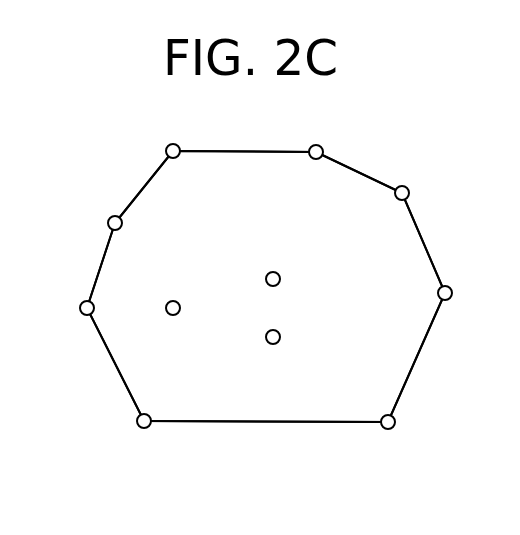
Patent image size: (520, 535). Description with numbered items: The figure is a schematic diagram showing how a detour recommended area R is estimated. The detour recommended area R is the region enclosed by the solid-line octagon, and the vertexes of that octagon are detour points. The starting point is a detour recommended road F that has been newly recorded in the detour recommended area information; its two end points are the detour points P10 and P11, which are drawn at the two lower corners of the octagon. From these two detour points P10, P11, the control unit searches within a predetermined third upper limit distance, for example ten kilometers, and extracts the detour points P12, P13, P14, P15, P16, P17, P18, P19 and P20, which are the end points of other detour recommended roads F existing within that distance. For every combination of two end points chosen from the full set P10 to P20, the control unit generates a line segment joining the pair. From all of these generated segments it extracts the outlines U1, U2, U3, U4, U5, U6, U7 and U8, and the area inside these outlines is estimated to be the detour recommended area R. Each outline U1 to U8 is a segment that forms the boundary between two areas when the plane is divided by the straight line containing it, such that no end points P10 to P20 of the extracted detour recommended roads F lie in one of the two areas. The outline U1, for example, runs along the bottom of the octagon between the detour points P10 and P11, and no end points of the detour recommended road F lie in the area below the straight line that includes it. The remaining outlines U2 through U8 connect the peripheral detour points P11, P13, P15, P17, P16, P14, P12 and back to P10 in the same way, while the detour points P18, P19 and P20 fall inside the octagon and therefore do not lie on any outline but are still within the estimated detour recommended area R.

The detour recommended road F is at (266, 307).
The detour recommended area R is at (259, 320).
The outline U1 is at (272, 456).
The outline U2 is at (451, 357).
The outline U3 is at (457, 243).
The outline U4 is at (379, 164).
The outline U5 is at (244, 170).
The outline U6 is at (118, 186).
The outline U7 is at (70, 265).
The outline U8 is at (88, 364).
The detour point P10 is at (117, 429).
The detour point P11 is at (414, 430).
The detour point P12 is at (58, 307).
The detour point P13 is at (471, 292).
The detour point P14 is at (88, 220).
The detour point P15 is at (433, 192).
The detour point P16 is at (173, 133).
The detour point P17 is at (313, 134).
The detour point P18 is at (303, 337).
The detour point P19 is at (290, 262).
The detour point P20 is at (190, 289).